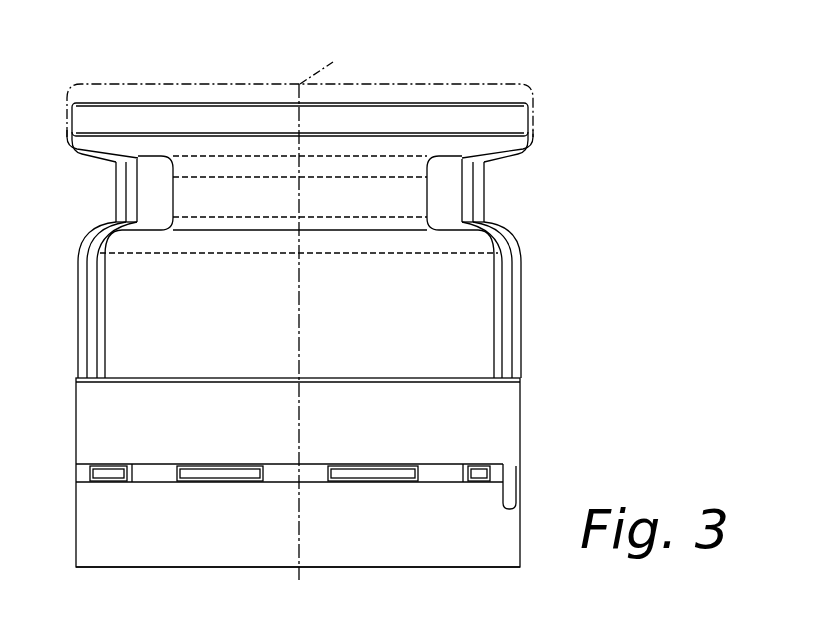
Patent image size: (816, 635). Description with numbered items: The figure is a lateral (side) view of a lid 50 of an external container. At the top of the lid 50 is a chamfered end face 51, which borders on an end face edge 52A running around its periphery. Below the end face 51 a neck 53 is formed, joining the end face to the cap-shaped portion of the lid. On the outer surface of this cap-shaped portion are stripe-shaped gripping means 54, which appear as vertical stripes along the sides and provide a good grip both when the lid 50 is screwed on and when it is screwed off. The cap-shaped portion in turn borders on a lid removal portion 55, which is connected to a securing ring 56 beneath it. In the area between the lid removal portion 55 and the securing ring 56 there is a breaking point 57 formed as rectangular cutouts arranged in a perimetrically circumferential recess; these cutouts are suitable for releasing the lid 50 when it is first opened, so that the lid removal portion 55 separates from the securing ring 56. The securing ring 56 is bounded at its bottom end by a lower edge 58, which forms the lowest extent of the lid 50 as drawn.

The lid 50 is at (137, 84).
The chamfered end face 51 is at (500, 83).
The end face edge 52A is at (507, 120).
The neck 53 is at (486, 186).
The stripe-shaped gripping means 54 is at (519, 307).
The lid removal portion 55 is at (521, 425).
The securing ring 56 is at (520, 527).
The breaking point 57 is at (407, 482).
The lower edge 58 is at (352, 568).